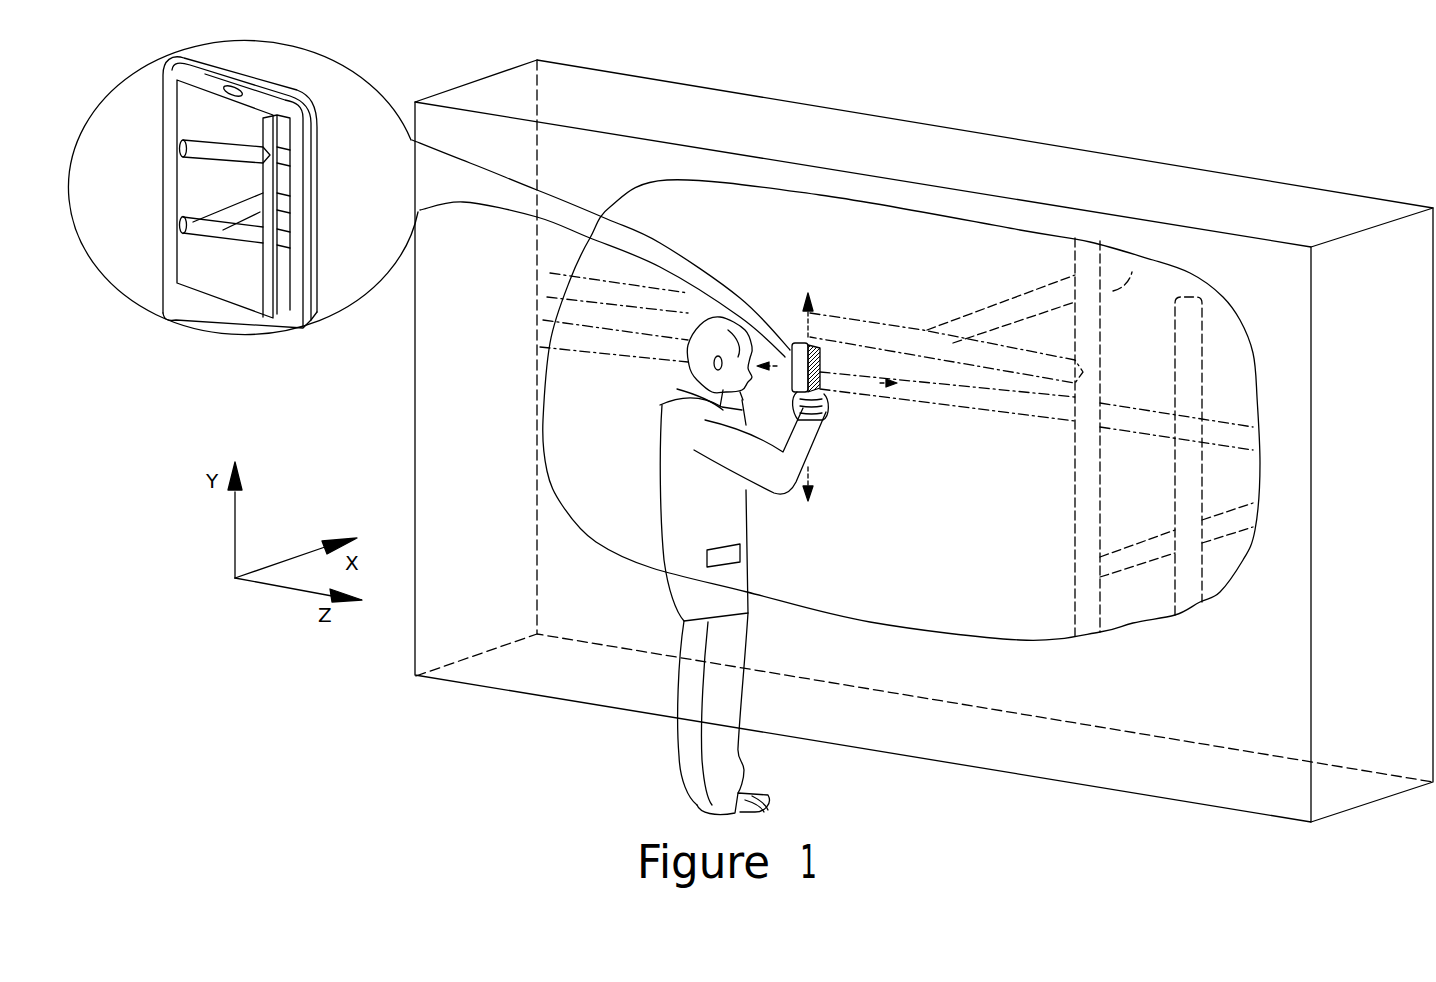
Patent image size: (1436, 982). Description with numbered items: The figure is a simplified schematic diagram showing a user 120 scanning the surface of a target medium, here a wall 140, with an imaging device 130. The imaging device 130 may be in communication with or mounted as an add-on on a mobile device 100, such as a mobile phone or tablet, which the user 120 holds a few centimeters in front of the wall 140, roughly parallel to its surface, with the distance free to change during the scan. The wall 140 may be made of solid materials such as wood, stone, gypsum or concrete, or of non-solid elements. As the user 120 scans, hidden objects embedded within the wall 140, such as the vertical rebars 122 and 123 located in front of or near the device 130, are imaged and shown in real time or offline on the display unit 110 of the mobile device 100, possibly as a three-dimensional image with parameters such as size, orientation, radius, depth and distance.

The mobile device 100 is at (482, 214).
The display unit 110 is at (790, 354).
The user 120 is at (652, 420).
The vertical rebar 122 is at (935, 377).
The vertical rebar 123 is at (1028, 352).
The imaging device 130 is at (822, 370).
The wall 140 is at (1223, 212).